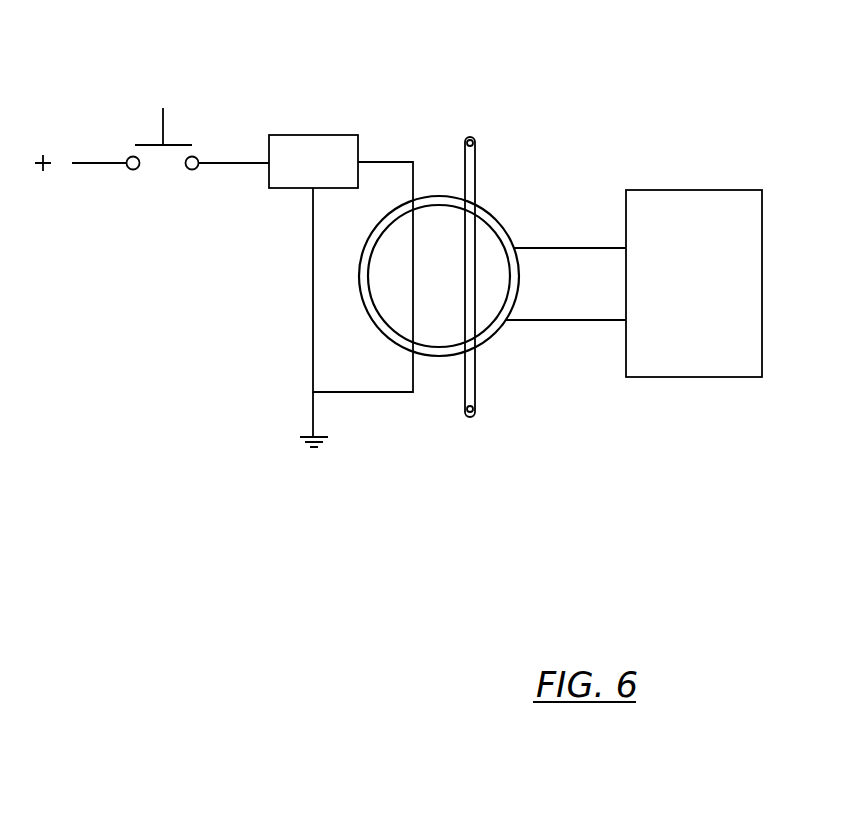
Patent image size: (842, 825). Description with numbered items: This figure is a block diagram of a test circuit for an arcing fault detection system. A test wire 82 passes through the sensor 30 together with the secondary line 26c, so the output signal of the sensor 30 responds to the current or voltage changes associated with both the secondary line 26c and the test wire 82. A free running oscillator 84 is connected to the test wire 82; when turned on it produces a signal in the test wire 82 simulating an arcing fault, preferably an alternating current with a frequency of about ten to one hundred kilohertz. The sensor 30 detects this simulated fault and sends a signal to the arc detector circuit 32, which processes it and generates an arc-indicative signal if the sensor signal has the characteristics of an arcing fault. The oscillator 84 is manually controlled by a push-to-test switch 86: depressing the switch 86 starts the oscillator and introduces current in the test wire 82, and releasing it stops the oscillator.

The push-to-test switch 86 is at (147, 138).
The free running oscillator 84 is at (298, 135).
The test wire 82 is at (385, 393).
The sensor 30 is at (508, 228).
The secondary line 26c is at (470, 137).
The arc detector circuit 32 is at (675, 190).